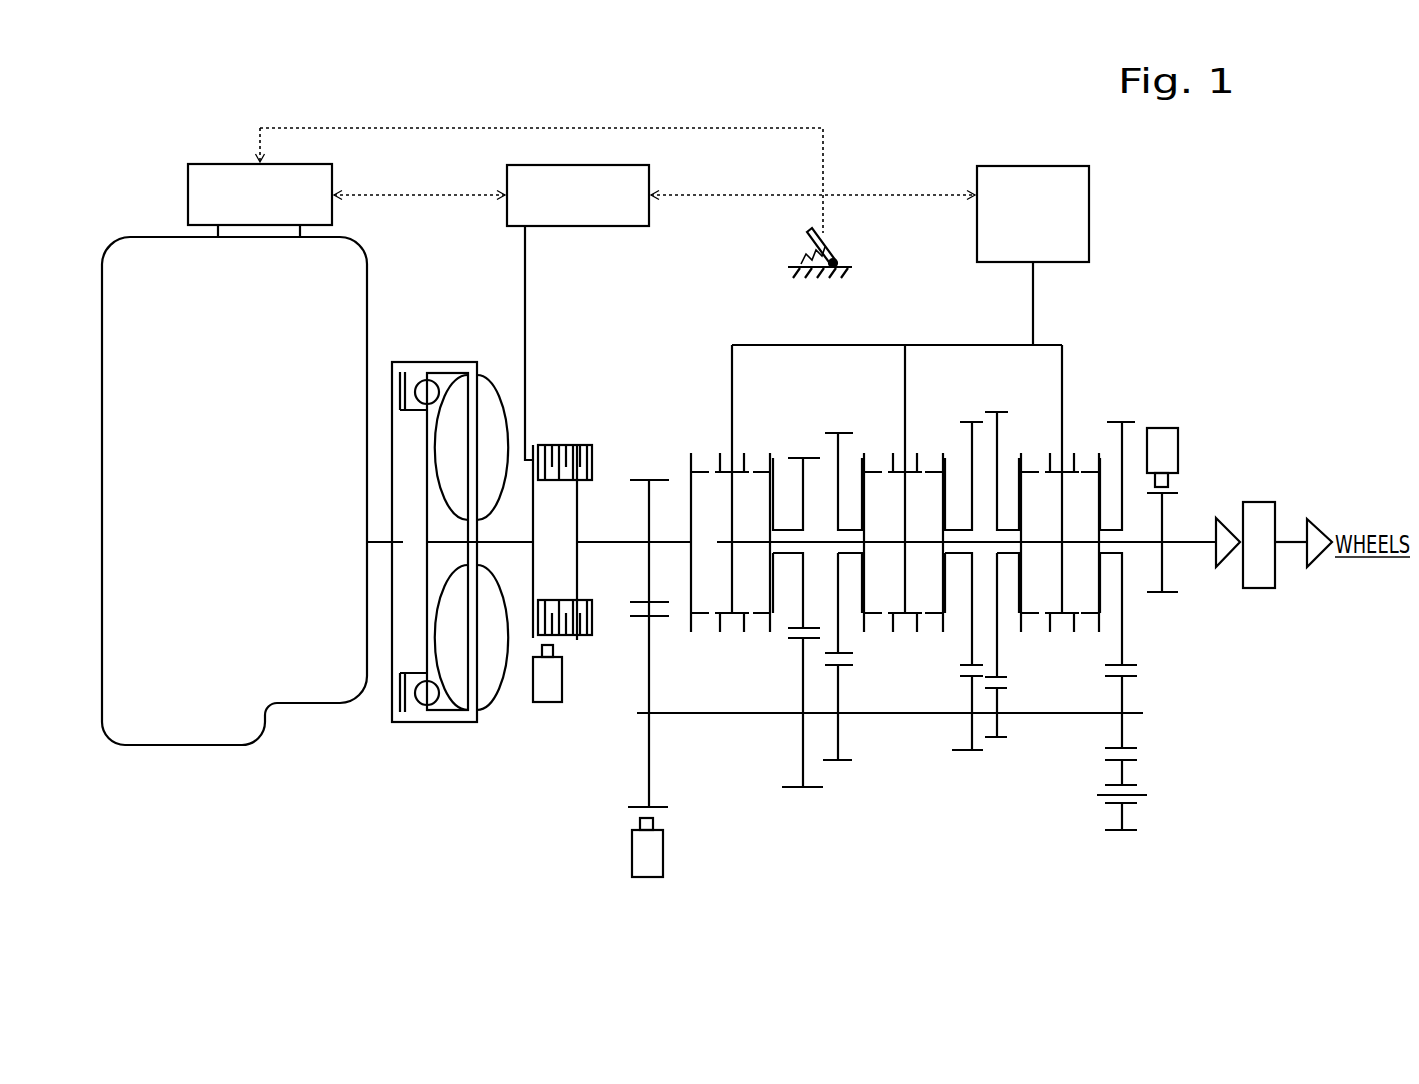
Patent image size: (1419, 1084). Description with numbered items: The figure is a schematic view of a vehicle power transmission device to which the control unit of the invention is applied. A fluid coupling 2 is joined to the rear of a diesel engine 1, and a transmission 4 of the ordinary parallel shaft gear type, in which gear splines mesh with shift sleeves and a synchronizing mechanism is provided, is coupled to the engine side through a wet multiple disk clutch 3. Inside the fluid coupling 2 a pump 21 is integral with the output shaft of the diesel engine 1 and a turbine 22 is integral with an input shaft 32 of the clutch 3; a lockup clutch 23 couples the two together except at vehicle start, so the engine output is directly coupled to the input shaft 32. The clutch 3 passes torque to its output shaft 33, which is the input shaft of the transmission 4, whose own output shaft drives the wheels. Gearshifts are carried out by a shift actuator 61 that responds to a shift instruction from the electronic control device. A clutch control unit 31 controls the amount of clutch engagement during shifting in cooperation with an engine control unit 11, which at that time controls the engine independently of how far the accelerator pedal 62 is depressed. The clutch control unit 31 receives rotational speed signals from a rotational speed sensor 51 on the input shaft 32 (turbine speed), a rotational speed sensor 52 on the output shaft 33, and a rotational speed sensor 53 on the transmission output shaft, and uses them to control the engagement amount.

The diesel engine 1 is at (187, 750).
The fluid coupling 2 is at (443, 536).
The clutch 3 is at (578, 439).
The transmission 4 is at (610, 887).
The engine control unit 11 is at (211, 160).
The pump 21 is at (489, 402).
The turbine 22 is at (457, 402).
The lockup clutch 23 is at (393, 382).
The clutch control unit 31 is at (560, 161).
The input shaft 32 is at (509, 531).
The output shaft 33 is at (595, 532).
The rotational speed sensor 51 is at (548, 706).
The rotational speed sensor 52 is at (668, 858).
The rotational speed sensor 53 is at (1161, 424).
The shift actuator 61 is at (1093, 215).
The accelerator pedal 62 is at (836, 244).